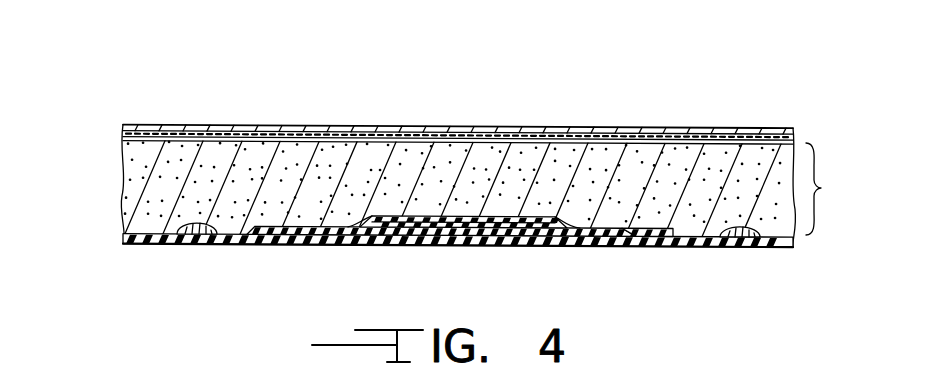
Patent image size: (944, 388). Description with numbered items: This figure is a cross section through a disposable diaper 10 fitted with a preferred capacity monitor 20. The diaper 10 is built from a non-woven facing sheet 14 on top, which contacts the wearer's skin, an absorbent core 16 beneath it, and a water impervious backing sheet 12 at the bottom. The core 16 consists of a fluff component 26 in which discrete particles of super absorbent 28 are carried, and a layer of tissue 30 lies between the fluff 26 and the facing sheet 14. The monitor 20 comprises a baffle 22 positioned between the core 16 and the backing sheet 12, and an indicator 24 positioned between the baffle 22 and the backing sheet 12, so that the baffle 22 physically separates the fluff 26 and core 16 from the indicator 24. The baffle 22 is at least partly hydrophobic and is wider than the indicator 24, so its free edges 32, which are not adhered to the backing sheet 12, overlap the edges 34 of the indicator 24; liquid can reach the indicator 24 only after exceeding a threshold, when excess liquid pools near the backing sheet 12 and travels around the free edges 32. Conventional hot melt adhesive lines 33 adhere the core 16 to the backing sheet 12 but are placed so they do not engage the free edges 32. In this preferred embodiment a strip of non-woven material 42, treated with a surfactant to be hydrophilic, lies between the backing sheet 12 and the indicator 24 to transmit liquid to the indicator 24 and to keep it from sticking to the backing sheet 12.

The disposable diaper 10 is at (659, 94).
The water impervious backing sheet 12 is at (653, 248).
The non-woven facing sheet 14 is at (515, 128).
The absorbent core 16 is at (493, 186).
The capacity monitor 20 is at (455, 214).
The baffle 22 is at (293, 228).
The indicator 24 is at (430, 240).
The fluff component 26 is at (137, 207).
The super absorbent particles 28 is at (197, 183).
The tissue layer 30 is at (370, 142).
The free edges of the baffle 32 is at (673, 229).
The hot melt adhesive lines 33 is at (185, 246).
The edges of the indicator 34 is at (368, 238).
The non-woven strip 42 is at (486, 240).